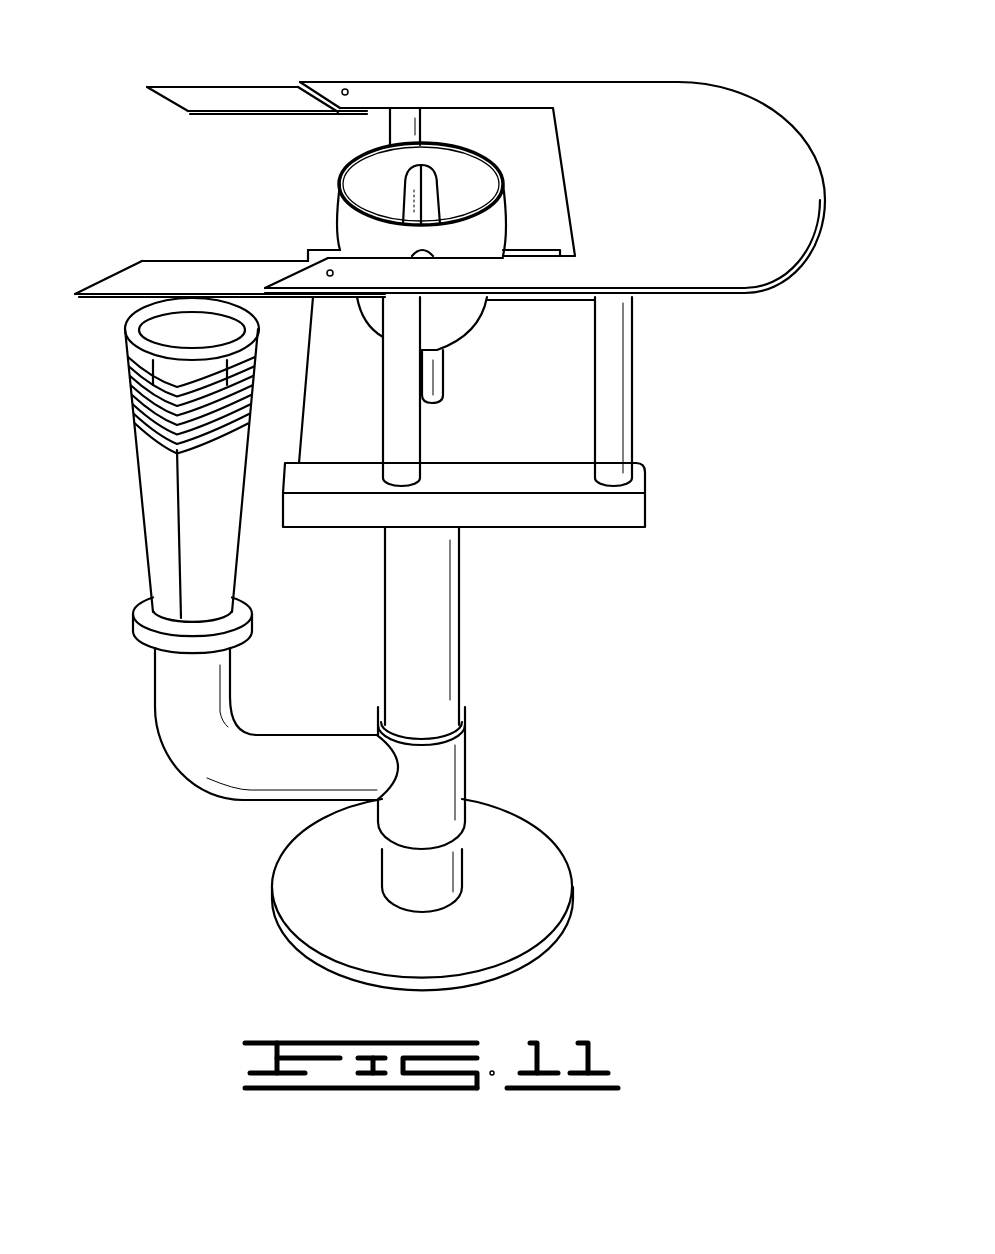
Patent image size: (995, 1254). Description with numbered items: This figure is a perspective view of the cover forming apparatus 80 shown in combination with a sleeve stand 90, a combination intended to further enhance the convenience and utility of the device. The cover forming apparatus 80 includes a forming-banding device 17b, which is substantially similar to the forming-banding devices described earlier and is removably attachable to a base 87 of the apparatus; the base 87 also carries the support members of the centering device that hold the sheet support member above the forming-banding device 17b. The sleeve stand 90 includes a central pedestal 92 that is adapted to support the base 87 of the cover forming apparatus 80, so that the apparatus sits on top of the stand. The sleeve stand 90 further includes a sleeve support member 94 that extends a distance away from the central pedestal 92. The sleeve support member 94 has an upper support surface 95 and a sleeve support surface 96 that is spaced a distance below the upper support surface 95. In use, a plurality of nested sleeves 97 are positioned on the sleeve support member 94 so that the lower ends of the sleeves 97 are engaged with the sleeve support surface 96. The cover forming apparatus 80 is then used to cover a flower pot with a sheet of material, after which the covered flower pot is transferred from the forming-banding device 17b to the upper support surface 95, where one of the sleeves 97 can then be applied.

The cover forming apparatus 80 is at (632, 82).
The forming-banding device 17b is at (340, 180).
The base 87 is at (603, 513).
The central pedestal 92 is at (459, 595).
The sleeve stand 90 is at (438, 663).
The upper support surface 95 is at (176, 333).
The nested sleeves 97 is at (150, 462).
The sleeve support surface 96 is at (147, 610).
The sleeve support member 94 is at (163, 700).